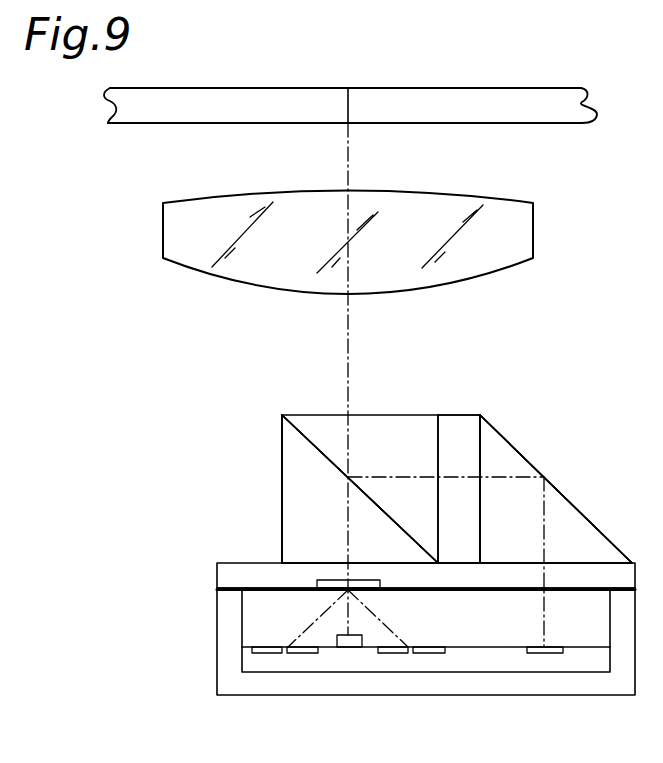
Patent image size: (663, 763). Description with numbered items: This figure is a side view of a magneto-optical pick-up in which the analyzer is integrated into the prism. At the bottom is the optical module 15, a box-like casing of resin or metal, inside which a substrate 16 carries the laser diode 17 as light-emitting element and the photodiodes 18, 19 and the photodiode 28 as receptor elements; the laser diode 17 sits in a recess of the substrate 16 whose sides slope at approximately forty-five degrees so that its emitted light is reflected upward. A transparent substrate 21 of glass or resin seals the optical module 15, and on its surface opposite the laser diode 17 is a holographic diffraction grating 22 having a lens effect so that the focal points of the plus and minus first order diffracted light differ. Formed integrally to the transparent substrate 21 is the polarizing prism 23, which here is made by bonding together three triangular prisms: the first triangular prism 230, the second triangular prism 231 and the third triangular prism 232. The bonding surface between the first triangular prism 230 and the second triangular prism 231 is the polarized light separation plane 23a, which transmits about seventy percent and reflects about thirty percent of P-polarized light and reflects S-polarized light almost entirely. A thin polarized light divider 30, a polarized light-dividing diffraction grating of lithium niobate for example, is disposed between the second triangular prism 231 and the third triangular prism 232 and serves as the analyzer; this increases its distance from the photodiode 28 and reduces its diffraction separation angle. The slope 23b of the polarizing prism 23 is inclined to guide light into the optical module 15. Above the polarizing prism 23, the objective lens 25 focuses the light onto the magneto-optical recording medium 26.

The magneto-optical recording medium 26 is at (558, 113).
The objective lens 25 is at (228, 265).
The polarizing prism 23 is at (487, 383).
The second triangular prism 231 is at (315, 420).
The third triangular prism 232 is at (490, 460).
The polarized light divider 30 is at (455, 422).
The polarized light separation plane 23a is at (322, 455).
The first triangular prism 230 is at (312, 505).
The slope 23b is at (572, 505).
The holographic diffraction grating 22 is at (358, 583).
The transparent substrate 21 is at (217, 565).
The optical module 15 is at (217, 655).
The substrate 16 is at (253, 662).
The laser diode 17 is at (353, 648).
The photodiode 18 is at (285, 660).
The photodiode 19 is at (413, 662).
The photodiode 28 is at (543, 662).